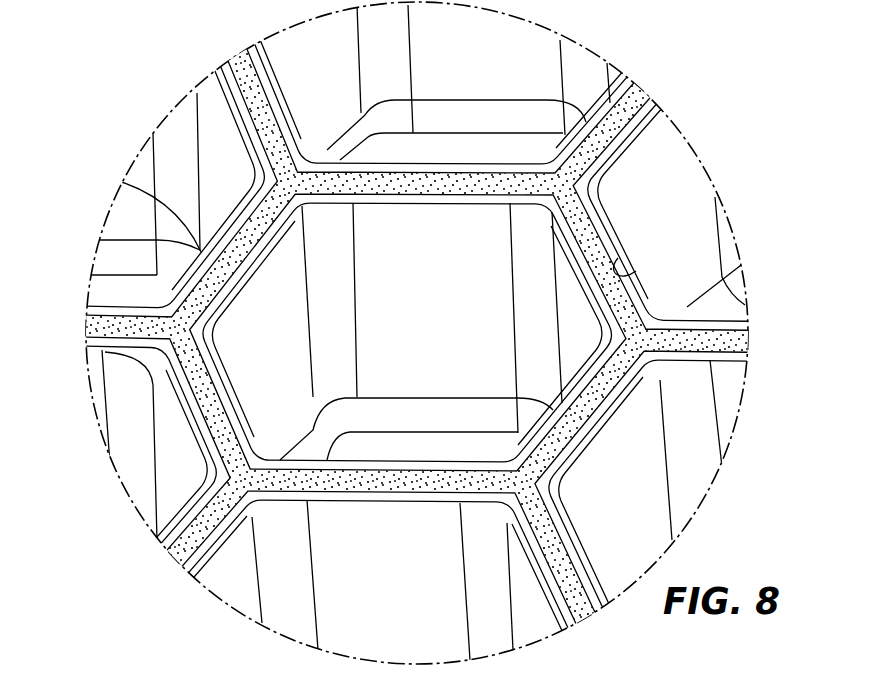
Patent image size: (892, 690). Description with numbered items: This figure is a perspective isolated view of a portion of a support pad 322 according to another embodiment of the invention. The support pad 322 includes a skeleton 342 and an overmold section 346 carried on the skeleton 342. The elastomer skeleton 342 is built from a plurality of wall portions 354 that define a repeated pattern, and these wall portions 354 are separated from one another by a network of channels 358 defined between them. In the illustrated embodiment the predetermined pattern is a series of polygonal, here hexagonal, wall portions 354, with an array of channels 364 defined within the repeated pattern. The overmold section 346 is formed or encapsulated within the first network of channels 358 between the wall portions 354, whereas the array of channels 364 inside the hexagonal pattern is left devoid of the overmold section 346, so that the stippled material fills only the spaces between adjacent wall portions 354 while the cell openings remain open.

The support pad 322 is at (695, 95).
The skeleton 342 is at (625, 478).
The overmold section 346 is at (712, 343).
The wall portions 354 is at (262, 255).
The network of channels 358 is at (636, 271).
The array of channels 364 is at (290, 363).